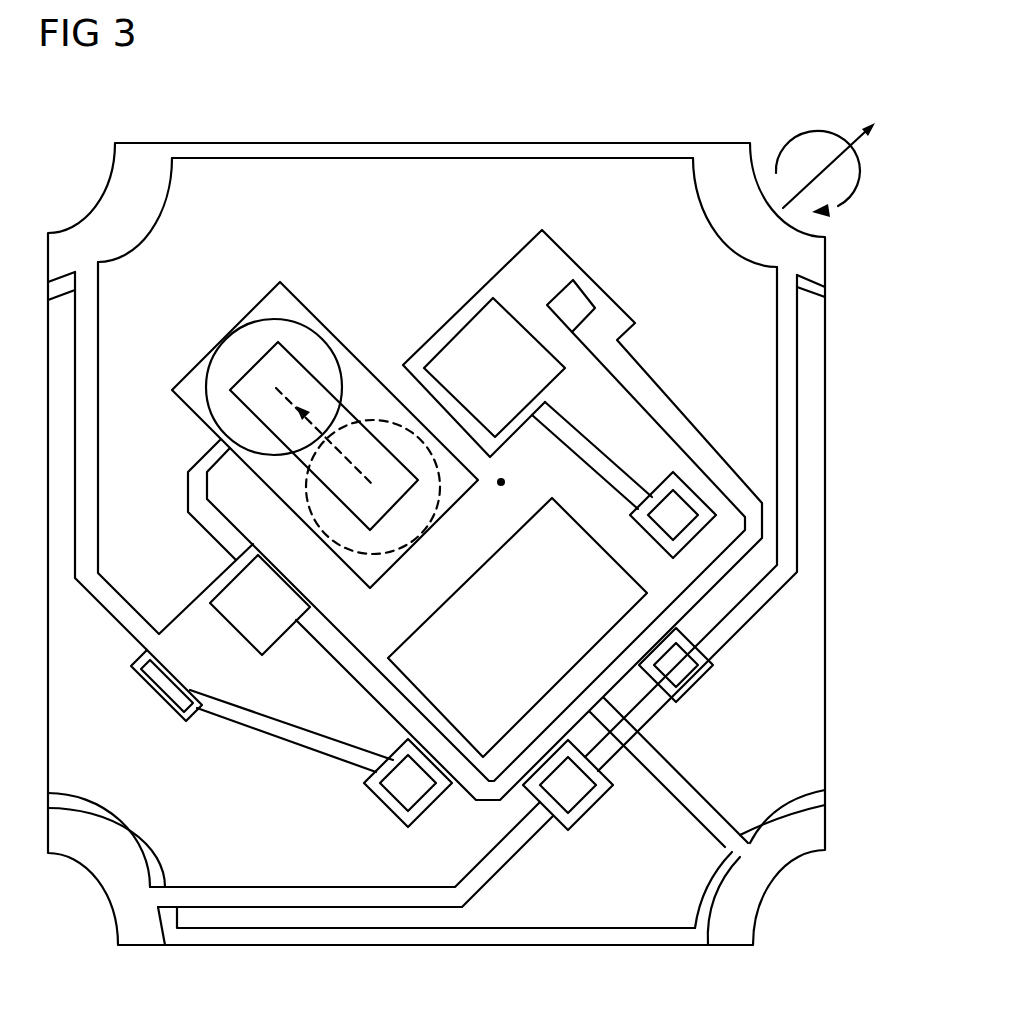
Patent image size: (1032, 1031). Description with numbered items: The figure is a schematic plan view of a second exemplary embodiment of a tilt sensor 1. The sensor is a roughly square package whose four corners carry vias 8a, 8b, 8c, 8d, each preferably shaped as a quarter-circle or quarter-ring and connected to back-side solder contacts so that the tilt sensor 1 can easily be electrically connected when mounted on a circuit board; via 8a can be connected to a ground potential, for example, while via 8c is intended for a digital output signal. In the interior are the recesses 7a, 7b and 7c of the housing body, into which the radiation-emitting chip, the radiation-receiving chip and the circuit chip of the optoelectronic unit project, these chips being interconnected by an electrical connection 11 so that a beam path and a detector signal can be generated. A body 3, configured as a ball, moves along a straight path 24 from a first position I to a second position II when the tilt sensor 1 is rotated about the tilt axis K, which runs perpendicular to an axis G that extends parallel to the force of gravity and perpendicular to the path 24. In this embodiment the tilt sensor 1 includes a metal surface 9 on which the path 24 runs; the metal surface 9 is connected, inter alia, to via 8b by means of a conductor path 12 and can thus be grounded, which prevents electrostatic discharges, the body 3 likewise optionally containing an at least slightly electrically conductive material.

The tilt sensor 1 is at (714, 86).
The body 3 is at (206, 380).
The recess 7a is at (458, 345).
The recess 7b is at (233, 597).
The recess 7c is at (470, 596).
The via 8a is at (108, 882).
The via 8b is at (768, 868).
The via 8c is at (812, 259).
The via 8d is at (106, 198).
The metal surface 9 is at (272, 367).
The electrical connection 11 is at (593, 447).
The conductor path 12 is at (190, 493).
The path 24 is at (310, 400).
The axis G is at (505, 482).
The tilt axis K is at (843, 152).
The first position I is at (298, 338).
The second position II is at (430, 513).